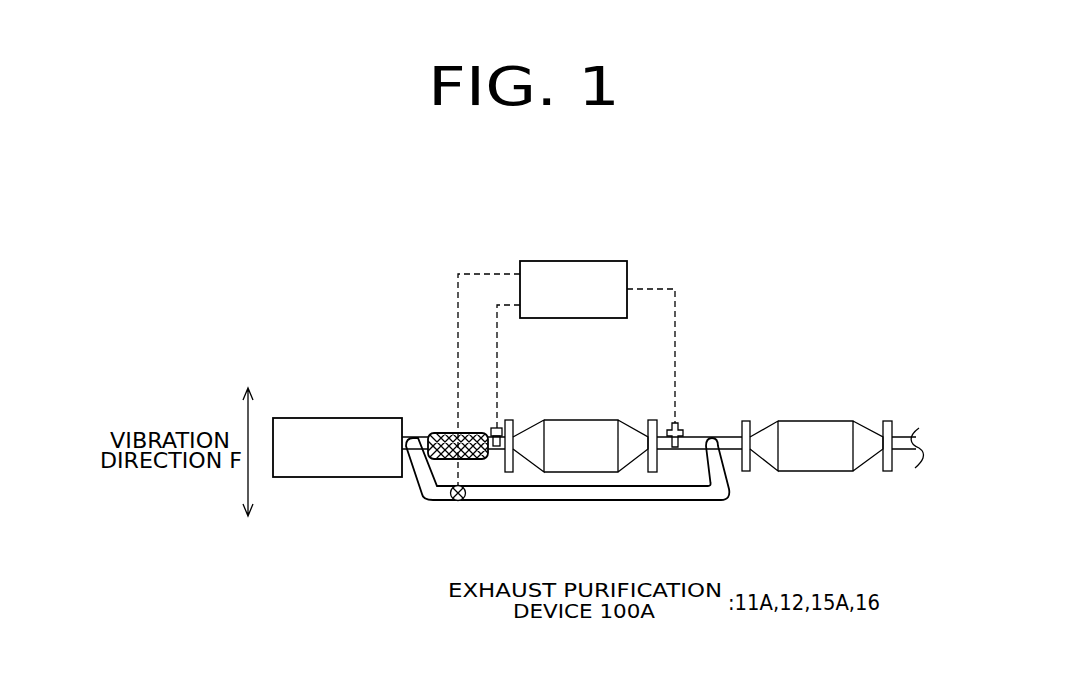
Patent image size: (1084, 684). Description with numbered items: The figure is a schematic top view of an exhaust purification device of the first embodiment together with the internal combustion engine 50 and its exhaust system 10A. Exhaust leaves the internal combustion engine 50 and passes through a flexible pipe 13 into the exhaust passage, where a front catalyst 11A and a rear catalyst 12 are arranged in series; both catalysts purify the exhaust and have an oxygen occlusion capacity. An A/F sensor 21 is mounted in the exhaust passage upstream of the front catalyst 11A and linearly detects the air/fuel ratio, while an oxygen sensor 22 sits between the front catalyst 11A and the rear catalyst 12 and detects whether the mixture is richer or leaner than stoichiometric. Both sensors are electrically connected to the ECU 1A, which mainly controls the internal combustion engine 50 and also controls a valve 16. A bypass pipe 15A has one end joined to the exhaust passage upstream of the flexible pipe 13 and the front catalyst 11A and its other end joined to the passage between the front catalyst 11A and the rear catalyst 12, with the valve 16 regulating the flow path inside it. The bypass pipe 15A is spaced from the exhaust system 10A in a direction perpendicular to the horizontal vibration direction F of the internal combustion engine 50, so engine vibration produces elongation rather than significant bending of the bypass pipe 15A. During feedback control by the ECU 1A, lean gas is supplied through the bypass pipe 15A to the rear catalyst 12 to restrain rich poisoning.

The ECU 1A is at (560, 261).
The exhaust system 10A is at (427, 350).
The internal combustion engine 50 is at (300, 418).
The flexible pipe 13 is at (442, 433).
The A/F sensor 21 is at (498, 428).
The front catalyst 11A is at (580, 419).
The oxygen sensor 22 is at (678, 428).
The rear catalyst 12 is at (810, 421).
The bypass pipe 15A is at (543, 502).
The valve 16 is at (458, 501).